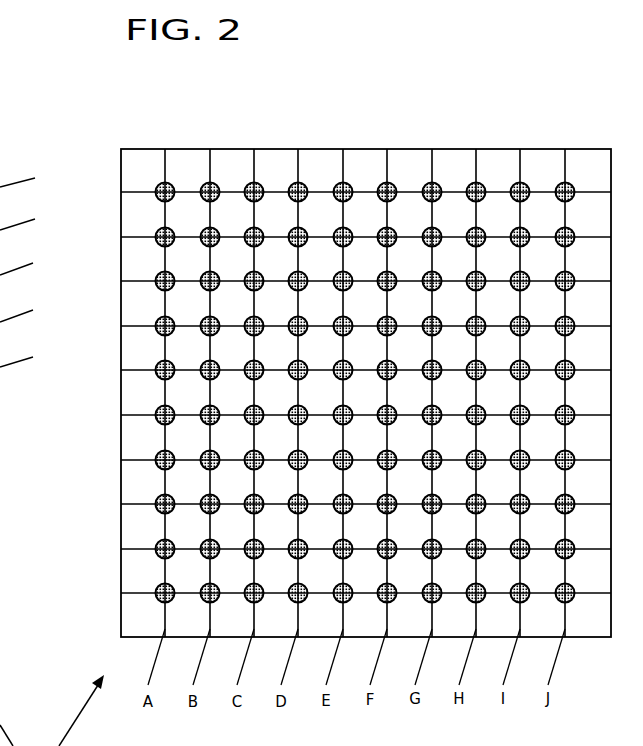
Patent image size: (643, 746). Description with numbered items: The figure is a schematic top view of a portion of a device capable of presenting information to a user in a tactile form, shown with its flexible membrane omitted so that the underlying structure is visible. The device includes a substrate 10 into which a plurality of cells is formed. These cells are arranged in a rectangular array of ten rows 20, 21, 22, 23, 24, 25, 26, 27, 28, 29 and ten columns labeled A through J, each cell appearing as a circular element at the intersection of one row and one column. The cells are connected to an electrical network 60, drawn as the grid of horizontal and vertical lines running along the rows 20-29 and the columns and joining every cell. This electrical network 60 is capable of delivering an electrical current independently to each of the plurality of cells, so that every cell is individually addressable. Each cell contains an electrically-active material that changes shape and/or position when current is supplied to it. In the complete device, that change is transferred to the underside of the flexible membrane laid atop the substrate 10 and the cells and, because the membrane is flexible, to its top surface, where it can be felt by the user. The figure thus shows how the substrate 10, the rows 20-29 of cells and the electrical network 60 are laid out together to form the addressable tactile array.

The substrate 10 is at (137, 164).
The row 20 is at (135, 192).
The row 21 is at (135, 237).
The row 22 is at (135, 281).
The row 23 is at (135, 326).
The row 24 is at (135, 370).
The row 25 is at (135, 415).
The row 26 is at (135, 460).
The row 27 is at (135, 504).
The row 28 is at (135, 549).
The row 29 is at (135, 593).
The electrical network 60 is at (392, 157).